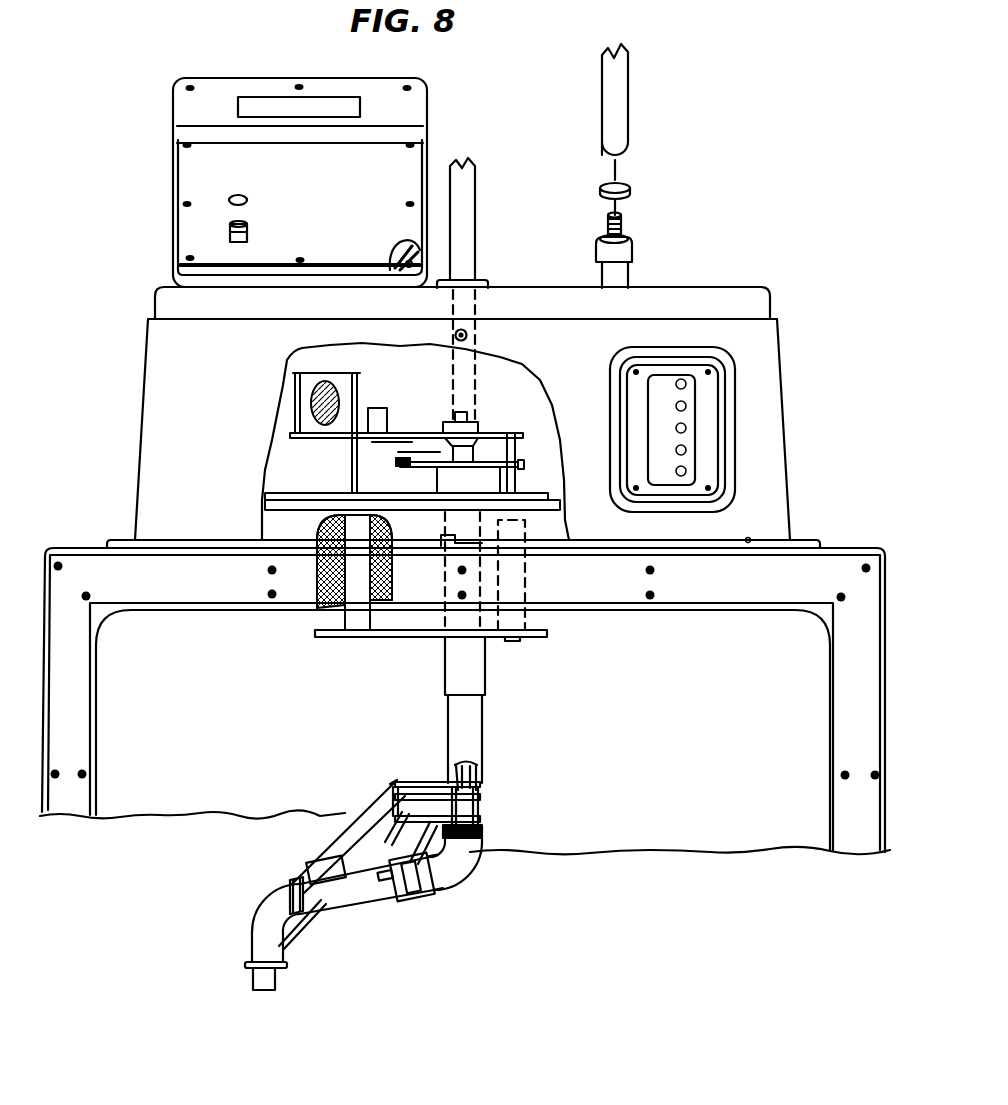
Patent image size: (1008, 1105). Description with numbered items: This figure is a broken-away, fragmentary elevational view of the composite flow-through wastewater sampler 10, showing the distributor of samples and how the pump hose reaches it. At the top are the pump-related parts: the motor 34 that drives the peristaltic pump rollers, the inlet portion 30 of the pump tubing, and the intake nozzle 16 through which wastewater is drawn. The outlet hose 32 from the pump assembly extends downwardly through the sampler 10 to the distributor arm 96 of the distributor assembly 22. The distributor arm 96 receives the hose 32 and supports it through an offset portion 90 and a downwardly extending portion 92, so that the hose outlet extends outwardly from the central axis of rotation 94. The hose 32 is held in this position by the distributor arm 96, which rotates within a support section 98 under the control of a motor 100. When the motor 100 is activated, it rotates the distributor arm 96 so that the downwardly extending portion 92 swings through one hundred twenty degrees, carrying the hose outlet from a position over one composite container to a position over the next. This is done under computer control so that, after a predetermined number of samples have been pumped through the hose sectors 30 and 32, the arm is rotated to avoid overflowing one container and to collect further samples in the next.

The composite wastewater sampler 10 is at (723, 176).
The intake nozzle 16 is at (642, 268).
The distributor assembly 22 is at (415, 711).
The inlet portion of tubing 30 is at (625, 110).
The outlet portion of tubing (hose) 32 is at (463, 216).
The motor 34 is at (254, 84).
The offset portion 90 is at (377, 900).
The downwardly extending portion 92 is at (272, 978).
The central axis of rotation 94 is at (481, 681).
The distributor arm 96 is at (386, 800).
The support section 98 is at (412, 642).
The motor 100 is at (386, 413).